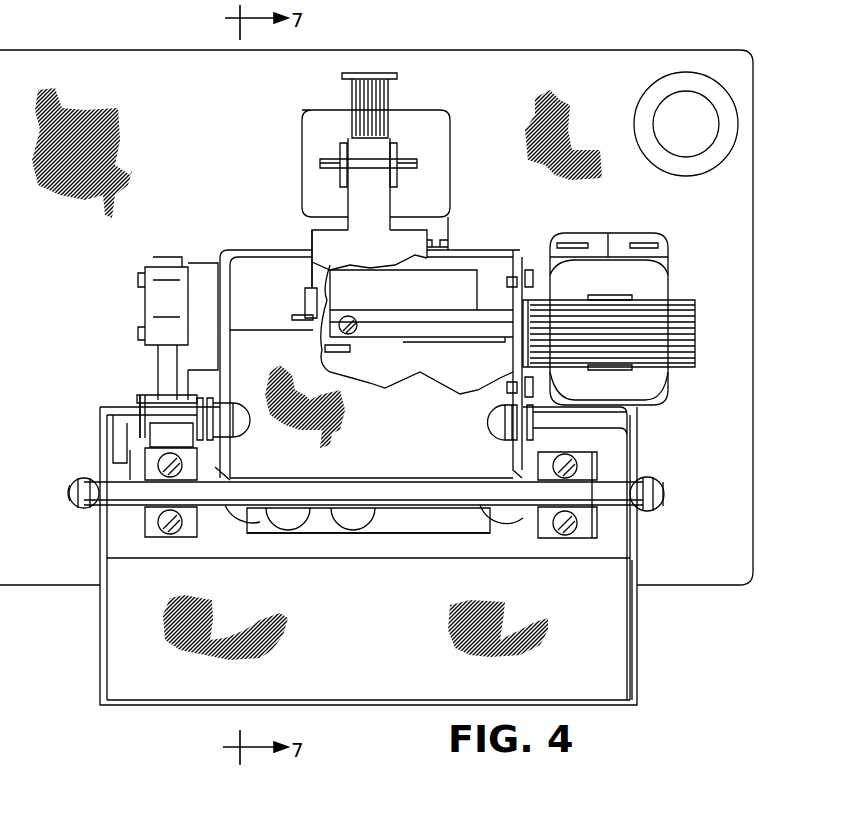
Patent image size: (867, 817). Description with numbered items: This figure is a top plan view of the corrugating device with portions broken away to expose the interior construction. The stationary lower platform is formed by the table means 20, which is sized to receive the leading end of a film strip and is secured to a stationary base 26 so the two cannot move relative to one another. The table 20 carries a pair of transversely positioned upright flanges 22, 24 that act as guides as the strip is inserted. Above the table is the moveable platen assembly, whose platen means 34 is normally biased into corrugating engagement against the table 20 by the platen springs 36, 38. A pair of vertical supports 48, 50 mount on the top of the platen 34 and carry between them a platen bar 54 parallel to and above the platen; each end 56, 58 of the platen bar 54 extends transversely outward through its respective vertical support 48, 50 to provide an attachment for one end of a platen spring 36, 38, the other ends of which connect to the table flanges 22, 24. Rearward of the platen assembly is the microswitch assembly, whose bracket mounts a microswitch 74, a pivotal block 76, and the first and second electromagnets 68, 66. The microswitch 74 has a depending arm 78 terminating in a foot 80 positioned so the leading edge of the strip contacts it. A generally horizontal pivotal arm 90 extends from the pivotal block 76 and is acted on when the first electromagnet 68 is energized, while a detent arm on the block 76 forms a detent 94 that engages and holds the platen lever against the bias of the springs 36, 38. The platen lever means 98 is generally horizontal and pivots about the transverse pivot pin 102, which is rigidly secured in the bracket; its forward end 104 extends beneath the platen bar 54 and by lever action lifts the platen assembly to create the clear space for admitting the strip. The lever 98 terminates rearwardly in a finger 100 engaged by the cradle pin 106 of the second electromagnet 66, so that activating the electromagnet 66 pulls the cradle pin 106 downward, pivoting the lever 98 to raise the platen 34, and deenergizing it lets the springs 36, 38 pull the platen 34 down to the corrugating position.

The table means 20 is at (185, 695).
The upright flange 22 is at (100, 672).
The upright flange 24 is at (637, 668).
The stationary base 26 is at (742, 304).
The platen means 34 is at (538, 552).
The platen spring 36 is at (72, 482).
The platen spring 38 is at (668, 494).
The vertical support 48 is at (140, 527).
The vertical support 50 is at (597, 527).
The platen bar 54 is at (425, 552).
The end of platen bar 56 is at (118, 483).
The end of platen bar 58 is at (617, 485).
The second electromagnet 66 is at (380, 80).
The first electromagnet 68 is at (697, 344).
The microswitch 74 is at (150, 300).
The pivotal block 76 is at (410, 301).
The depending arm 78 is at (158, 360).
The foot 80 is at (140, 425).
The pivotal arm 90 is at (418, 325).
The detent 94 is at (305, 296).
The platen lever means 98 is at (322, 238).
The finger 100 is at (375, 195).
The transverse pivot pin 102 is at (490, 420).
The forward end of platen lever 104 is at (388, 527).
The cradle pin 106 is at (412, 160).